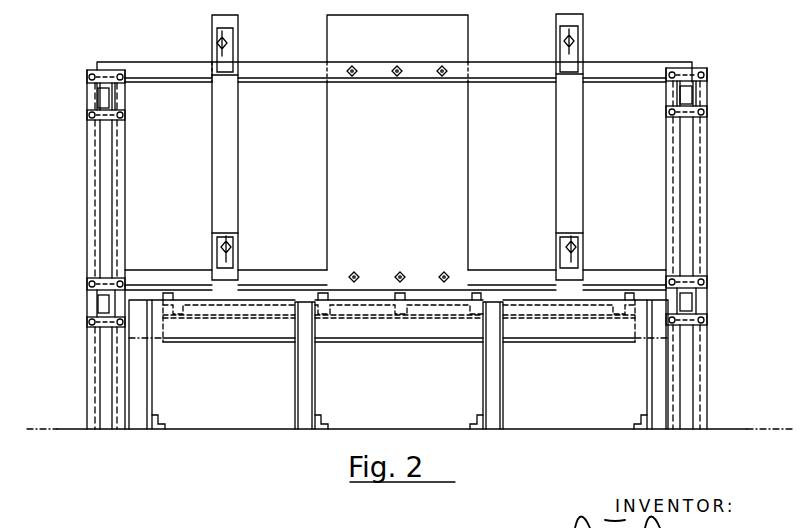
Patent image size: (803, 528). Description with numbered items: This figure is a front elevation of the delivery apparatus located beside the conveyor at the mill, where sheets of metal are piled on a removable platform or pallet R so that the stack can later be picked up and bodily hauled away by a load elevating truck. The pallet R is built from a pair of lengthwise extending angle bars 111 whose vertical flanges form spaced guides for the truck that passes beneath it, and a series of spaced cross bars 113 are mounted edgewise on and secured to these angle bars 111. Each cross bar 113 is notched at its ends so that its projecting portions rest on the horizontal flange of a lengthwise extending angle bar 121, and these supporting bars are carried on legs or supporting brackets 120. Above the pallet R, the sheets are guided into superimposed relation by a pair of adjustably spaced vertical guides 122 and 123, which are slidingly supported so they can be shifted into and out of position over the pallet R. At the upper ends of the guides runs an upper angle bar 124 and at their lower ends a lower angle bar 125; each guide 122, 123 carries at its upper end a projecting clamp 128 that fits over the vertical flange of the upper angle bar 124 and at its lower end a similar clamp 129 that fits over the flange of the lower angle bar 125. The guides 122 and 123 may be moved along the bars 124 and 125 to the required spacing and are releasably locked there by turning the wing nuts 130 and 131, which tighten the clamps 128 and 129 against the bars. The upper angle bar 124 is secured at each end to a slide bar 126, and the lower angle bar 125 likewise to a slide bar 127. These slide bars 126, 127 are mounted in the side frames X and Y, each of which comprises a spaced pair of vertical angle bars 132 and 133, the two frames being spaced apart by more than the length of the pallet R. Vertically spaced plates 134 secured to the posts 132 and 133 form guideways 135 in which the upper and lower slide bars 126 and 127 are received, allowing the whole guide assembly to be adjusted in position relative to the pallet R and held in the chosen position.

The lengthwise extending angle bar 111 is at (236, 343).
The cross bar 113 is at (168, 293).
The supporting bracket 120 is at (145, 398).
The lengthwise extending angle bar 121 is at (163, 344).
The vertical guide 122 is at (566, 148).
The vertical guide 123 is at (225, 160).
The upper angle bar 124 is at (278, 68).
The lower angle bar 125 is at (288, 279).
The slide bar 126 is at (98, 97).
The slide bar 127 is at (102, 303).
The clamp 128 is at (213, 53).
The clamp 129 is at (237, 263).
The wing nut 130 is at (221, 38).
The wing nut 131 is at (229, 246).
The vertical angle bar 132 is at (120, 201).
The vertical angle bar 133 is at (90, 225).
The plate 134 is at (706, 72).
The guideway 135 is at (692, 91).
The side frame X is at (80, 190).
The side frame Y is at (707, 166).
The pallet R is at (412, 292).